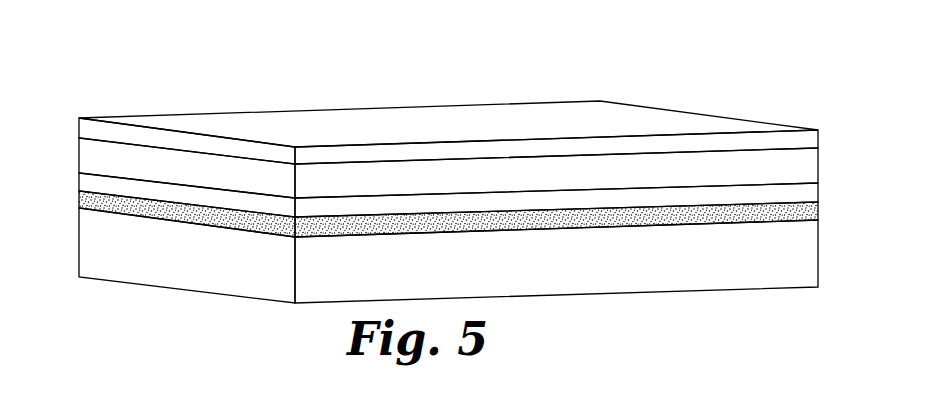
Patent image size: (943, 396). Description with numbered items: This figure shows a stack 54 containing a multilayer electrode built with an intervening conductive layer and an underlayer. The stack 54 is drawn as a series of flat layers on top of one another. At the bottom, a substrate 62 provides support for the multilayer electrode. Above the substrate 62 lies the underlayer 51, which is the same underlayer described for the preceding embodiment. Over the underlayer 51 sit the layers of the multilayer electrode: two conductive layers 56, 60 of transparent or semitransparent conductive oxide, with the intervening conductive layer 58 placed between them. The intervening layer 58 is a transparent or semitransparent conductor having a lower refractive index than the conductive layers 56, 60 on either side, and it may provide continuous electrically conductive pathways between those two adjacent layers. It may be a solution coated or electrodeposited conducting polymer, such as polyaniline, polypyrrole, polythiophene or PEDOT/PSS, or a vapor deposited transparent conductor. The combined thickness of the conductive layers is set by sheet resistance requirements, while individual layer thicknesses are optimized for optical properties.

The stack 54 is at (268, 73).
The conductive layer 56 is at (92, 129).
The intervening conductive layer 58 is at (92, 158).
The conductive layer 60 is at (92, 180).
The underlayer 51 is at (79, 200).
The substrate 62 is at (92, 255).